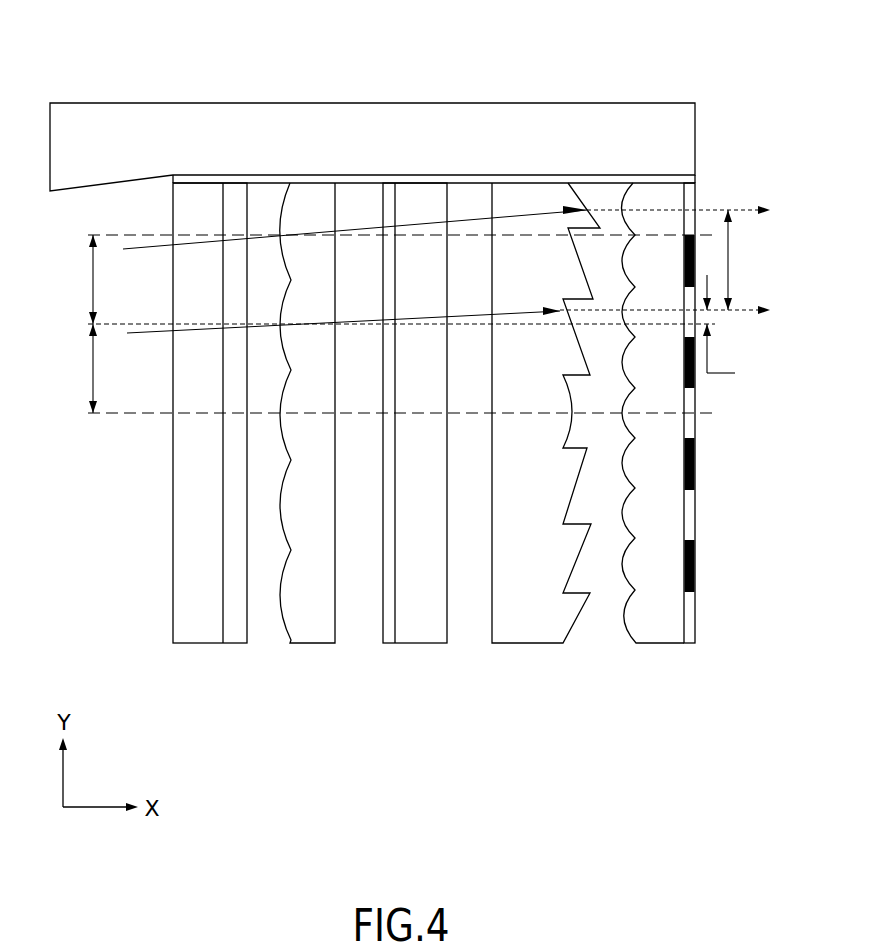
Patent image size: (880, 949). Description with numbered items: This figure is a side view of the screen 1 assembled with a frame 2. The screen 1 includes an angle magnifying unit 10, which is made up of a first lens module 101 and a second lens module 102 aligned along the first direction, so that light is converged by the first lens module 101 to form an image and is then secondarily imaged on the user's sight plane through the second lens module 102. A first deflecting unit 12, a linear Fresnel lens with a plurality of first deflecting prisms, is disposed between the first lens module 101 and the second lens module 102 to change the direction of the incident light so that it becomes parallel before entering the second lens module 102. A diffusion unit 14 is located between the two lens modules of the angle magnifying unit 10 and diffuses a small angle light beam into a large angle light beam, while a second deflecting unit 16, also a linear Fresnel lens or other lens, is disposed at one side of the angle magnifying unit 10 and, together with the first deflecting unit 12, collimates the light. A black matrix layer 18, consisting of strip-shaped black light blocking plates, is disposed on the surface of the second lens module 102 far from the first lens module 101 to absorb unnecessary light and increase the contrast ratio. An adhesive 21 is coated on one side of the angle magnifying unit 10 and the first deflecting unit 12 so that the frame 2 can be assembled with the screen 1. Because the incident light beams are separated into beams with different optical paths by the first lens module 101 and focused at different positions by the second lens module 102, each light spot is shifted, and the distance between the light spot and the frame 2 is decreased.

The screen 1 is at (138, 55).
The frame 2 is at (690, 118).
The adhesive 21 is at (688, 180).
The second deflecting unit 16 is at (203, 644).
The angle magnifying unit 10 is at (482, 476).
The first lens module 101 is at (313, 644).
The diffusion unit 14 is at (420, 644).
The first deflecting unit 12 is at (530, 644).
The second lens module 102 is at (652, 447).
The black matrix layer 18 is at (690, 644).